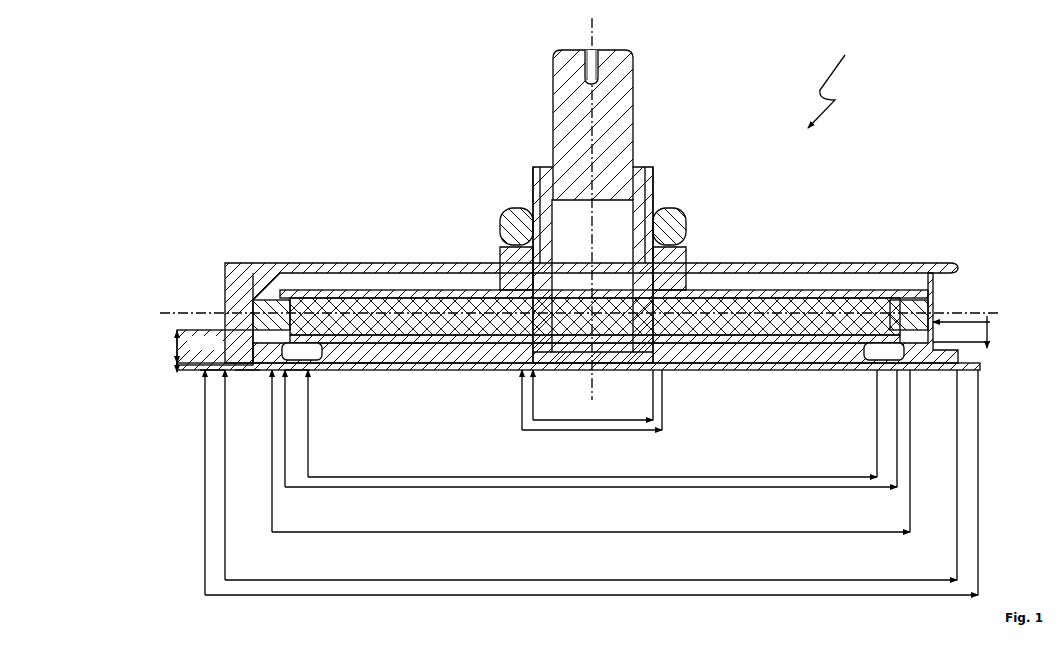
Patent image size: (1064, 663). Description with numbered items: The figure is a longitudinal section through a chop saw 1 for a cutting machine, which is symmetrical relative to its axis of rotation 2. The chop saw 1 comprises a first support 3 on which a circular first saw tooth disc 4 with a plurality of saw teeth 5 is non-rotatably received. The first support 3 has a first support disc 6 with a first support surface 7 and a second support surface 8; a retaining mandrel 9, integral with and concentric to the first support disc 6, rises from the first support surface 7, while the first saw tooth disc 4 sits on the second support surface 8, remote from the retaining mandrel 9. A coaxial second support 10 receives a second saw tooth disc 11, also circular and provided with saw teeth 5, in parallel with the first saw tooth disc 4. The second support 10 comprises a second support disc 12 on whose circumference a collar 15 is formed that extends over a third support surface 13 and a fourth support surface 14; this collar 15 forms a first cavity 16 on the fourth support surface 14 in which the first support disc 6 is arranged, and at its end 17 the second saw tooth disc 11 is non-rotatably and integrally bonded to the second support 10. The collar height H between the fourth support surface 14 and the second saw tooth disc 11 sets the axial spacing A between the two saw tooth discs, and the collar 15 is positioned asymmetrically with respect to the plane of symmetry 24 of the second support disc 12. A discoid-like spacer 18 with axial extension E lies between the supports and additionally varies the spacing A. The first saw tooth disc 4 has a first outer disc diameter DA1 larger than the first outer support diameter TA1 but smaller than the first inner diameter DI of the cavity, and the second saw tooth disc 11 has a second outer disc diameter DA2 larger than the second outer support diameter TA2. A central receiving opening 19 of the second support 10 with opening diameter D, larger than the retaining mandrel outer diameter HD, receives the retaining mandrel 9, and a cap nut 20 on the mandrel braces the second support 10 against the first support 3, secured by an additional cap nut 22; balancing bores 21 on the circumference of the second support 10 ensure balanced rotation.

The chop saw 1 is at (830, 82).
The axis of rotation 2 is at (603, 42).
The first support 3 is at (746, 372).
The first saw tooth disc 4 is at (296, 380).
The saw teeth 5 is at (905, 365).
The first support disc 6 is at (778, 372).
The first support surface 7 is at (375, 265).
The second support surface 8 is at (372, 372).
The retaining mandrel 9 is at (533, 183).
The second support 10 is at (760, 292).
The second saw tooth disc 11 is at (210, 373).
The second support disc 12 is at (812, 298).
The third support surface 13 is at (418, 298).
The fourth support surface 14 is at (410, 365).
The collar 15 is at (245, 340).
The first cavity 16 is at (312, 352).
The end 17 is at (248, 373).
The spacer 18 is at (708, 372).
The receiving opening 19 is at (546, 302).
The cap nut 20 is at (678, 258).
The balancing bores 21 is at (935, 315).
The additional cap nut 22 is at (668, 215).
The plane of symmetry 24 is at (238, 305).
The collar height H is at (175, 345).
The axial spacing A is at (175, 368).
The axial extension E is at (990, 330).
The opening diameter D is at (575, 418).
The retaining mandrel outer diameter HD is at (592, 432).
The first outer support diameter TA1 is at (497, 475).
The second outer support diameter TA2 is at (640, 490).
The first outer disc diameter DA1 is at (503, 490).
The first inner diameter DI is at (580, 535).
The second outer disc diameter DA2 is at (643, 598).